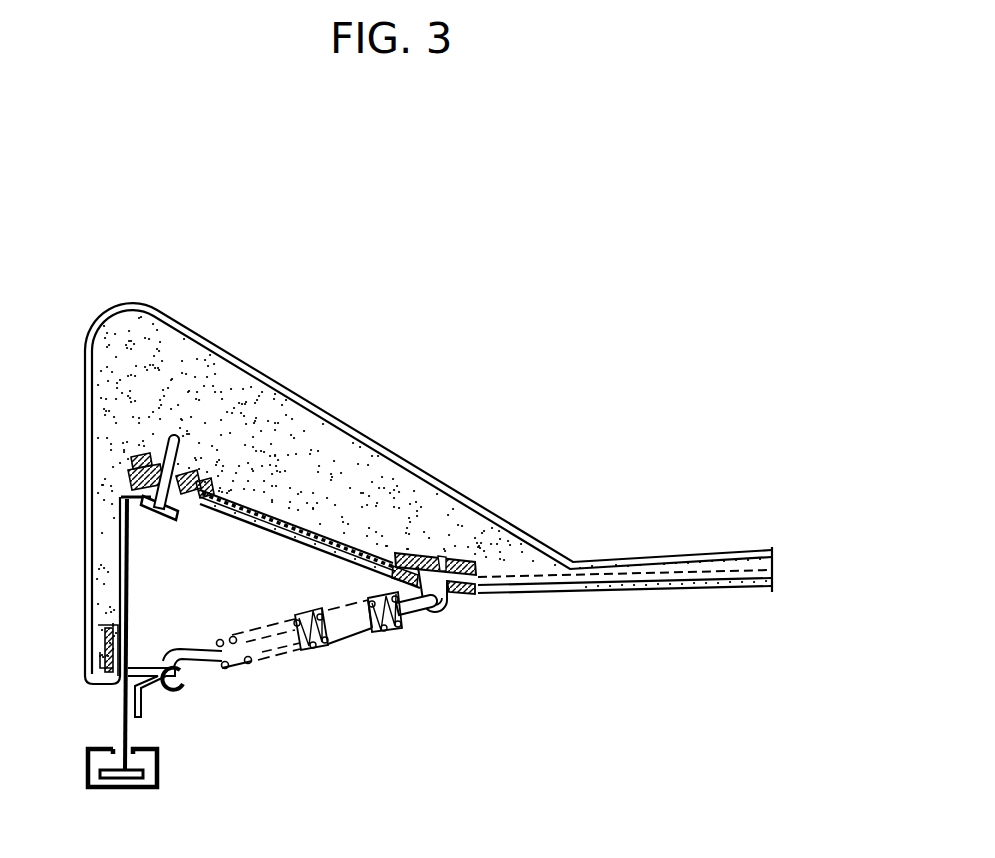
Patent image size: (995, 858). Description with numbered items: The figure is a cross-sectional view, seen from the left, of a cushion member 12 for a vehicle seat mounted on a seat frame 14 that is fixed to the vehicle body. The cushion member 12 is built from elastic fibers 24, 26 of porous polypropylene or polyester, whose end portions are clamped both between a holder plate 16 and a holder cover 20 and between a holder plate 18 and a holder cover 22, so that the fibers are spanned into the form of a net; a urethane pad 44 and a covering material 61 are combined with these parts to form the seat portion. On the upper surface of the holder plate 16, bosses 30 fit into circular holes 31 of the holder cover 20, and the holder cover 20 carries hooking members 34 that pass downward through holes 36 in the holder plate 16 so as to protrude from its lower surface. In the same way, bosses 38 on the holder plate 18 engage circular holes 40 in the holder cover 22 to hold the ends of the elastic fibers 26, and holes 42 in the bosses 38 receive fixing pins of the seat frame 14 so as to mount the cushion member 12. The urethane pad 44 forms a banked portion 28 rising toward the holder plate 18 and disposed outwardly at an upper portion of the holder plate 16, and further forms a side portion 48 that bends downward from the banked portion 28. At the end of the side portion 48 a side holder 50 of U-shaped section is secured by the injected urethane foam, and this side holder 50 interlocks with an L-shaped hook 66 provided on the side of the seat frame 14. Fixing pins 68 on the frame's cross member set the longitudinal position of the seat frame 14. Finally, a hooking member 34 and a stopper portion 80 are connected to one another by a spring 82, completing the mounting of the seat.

The cushion member 12 is at (636, 492).
The seat frame 14 is at (132, 603).
The holder plate 16 is at (470, 590).
The holder plate 18 is at (197, 513).
The holder cover 20 is at (418, 553).
The holder cover 22 is at (228, 485).
The elastic fibers 24 is at (600, 579).
The elastic fibers 26 is at (289, 540).
The banked portion 28 is at (125, 323).
The bosses 30 is at (408, 622).
The circular holes 31 is at (443, 563).
The hooking members 34 is at (444, 612).
The holes 36 is at (452, 602).
The bosses 38 is at (212, 480).
The circular holes 40 is at (157, 455).
The holes 42 is at (190, 470).
The urethane pad 44 is at (350, 445).
The side portion 48 is at (110, 558).
The side holder 50 is at (104, 652).
The covering material 61 is at (396, 452).
The L-shaped hook 66 is at (106, 630).
The fixing pins 68 is at (159, 520).
The stopper portion 80 is at (145, 692).
The spring 82 is at (355, 634).